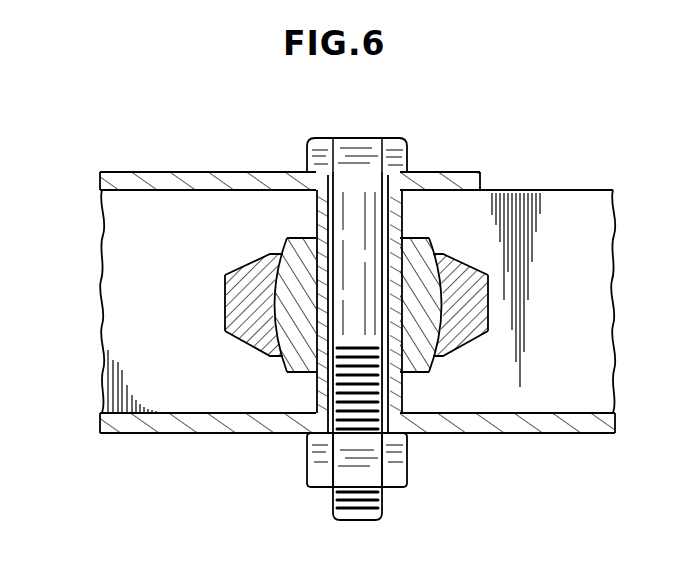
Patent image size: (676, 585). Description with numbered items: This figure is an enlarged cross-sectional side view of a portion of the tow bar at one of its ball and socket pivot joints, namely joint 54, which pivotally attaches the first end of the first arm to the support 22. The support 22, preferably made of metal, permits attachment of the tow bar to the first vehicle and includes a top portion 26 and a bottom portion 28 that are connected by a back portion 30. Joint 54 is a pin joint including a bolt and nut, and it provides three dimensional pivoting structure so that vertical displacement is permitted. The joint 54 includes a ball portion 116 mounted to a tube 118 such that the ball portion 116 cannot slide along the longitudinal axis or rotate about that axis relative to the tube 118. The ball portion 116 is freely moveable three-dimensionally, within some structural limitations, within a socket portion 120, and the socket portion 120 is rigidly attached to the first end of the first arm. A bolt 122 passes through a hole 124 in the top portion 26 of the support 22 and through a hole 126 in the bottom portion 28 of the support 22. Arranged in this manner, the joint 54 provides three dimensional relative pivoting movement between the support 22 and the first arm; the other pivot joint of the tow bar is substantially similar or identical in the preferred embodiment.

The support 22 is at (126, 172).
The top portion 26 is at (209, 172).
The bottom portion 28 is at (200, 433).
The back portion 30 is at (102, 285).
The joint 54 is at (397, 140).
The ball portion 116 is at (432, 246).
The tube 118 is at (406, 387).
The socket portion 120 is at (490, 313).
The bolt 122 is at (380, 515).
The hole 124 is at (383, 180).
The hole 126 is at (377, 427).